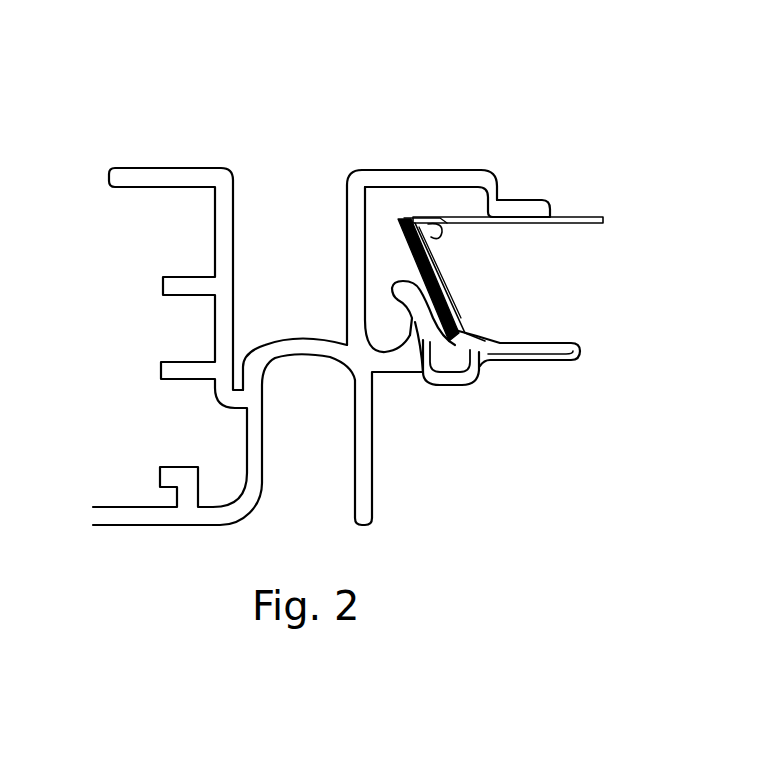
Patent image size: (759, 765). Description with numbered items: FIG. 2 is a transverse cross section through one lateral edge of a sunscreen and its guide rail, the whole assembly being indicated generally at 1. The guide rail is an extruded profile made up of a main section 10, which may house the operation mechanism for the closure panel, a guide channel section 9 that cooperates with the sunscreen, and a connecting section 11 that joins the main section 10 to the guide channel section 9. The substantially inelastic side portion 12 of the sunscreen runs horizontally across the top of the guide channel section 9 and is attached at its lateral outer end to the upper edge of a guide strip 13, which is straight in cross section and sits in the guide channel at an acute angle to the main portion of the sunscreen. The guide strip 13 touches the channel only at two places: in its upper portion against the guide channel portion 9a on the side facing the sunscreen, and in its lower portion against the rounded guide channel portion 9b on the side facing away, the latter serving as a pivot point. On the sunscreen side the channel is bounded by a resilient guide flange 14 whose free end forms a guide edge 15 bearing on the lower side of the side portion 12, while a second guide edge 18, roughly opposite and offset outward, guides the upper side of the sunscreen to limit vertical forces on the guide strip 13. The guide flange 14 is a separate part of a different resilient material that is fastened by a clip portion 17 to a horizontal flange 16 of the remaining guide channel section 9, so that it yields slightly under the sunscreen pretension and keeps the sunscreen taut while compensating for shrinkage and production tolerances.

The frame profile assembly 1 is at (242, 116).
The guide channel section 9 is at (420, 170).
The guide channel portion 9a is at (397, 221).
The rounded guide channel portion 9b is at (414, 345).
The main section 10 is at (139, 514).
The connecting section 11 is at (302, 340).
The side portion 12 is at (592, 218).
The guide strip 13 is at (482, 365).
The guide flange 14 is at (447, 297).
The guide edge 15 is at (447, 228).
The horizontal flange 16 is at (522, 352).
The clip portion 17 is at (582, 353).
The second guide edge 18 is at (525, 217).